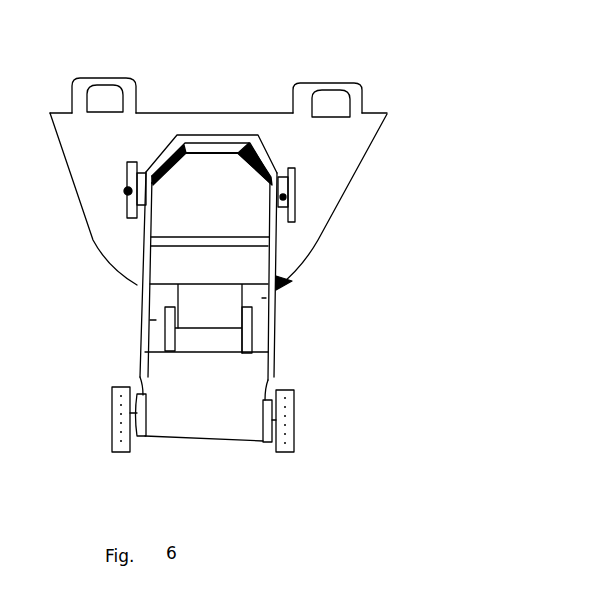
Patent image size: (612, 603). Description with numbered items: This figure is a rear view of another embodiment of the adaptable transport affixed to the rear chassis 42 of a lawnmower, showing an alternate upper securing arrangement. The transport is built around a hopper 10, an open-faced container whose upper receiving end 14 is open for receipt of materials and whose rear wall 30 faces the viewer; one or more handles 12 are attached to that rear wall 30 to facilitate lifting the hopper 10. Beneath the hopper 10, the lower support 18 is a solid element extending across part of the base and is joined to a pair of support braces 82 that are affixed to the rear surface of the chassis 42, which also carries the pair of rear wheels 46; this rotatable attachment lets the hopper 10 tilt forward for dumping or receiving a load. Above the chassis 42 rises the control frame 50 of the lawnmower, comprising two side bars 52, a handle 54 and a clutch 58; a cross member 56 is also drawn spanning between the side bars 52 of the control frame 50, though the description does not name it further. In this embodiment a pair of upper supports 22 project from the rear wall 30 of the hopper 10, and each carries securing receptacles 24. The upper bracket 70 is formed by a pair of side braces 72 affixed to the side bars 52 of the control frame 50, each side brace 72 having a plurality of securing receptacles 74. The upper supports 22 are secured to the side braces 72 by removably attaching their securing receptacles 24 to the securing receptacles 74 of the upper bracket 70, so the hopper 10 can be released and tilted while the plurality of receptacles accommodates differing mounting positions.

The hopper 10 is at (424, 157).
The handle 12 is at (108, 78).
The upper receiving end 14 is at (210, 110).
The lower support 18 is at (220, 310).
The upper support 22 is at (131, 214).
The securing receptacle 24 is at (135, 185).
The rear wall 30 is at (341, 151).
The chassis 42 is at (210, 399).
The rear wheel 46 is at (294, 419).
The control frame 50 is at (111, 307).
The side bar 52 is at (276, 273).
The handle 54 is at (253, 142).
The cross member 56 is at (210, 238).
The clutch 58 is at (216, 153).
The upper bracket 70 is at (318, 201).
The side brace 72 is at (285, 200).
The securing receptacle 74 is at (142, 190).
The support brace 82 is at (252, 327).